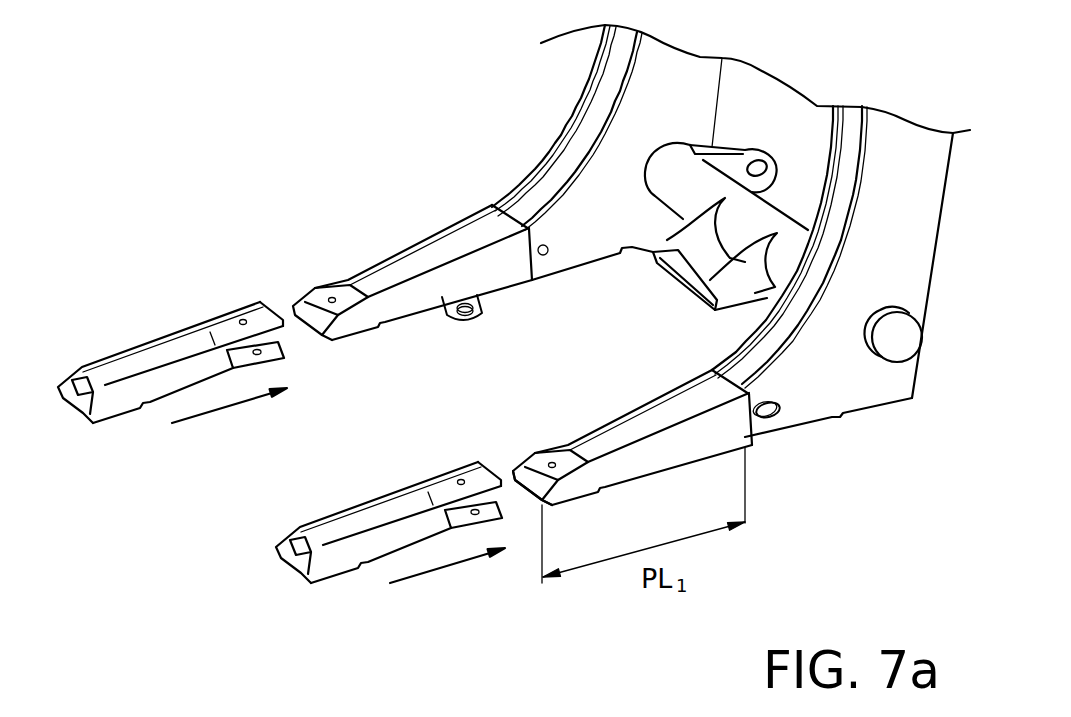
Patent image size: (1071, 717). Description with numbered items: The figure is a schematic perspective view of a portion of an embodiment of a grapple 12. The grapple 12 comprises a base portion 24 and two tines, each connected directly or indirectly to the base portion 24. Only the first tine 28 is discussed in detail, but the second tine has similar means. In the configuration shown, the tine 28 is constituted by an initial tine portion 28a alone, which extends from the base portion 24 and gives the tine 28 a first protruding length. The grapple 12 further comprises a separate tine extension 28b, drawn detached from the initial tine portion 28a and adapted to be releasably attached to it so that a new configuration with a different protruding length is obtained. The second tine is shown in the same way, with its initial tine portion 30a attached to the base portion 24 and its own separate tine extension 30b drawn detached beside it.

The grapple 12 is at (424, 131).
The base portion 24 is at (913, 443).
The first tine 28 is at (790, 502).
The initial tine portion 28a is at (483, 401).
The separate tine extension 28b is at (322, 482).
The initial tine portion of the second tine 30a is at (331, 225).
The separate tine extension of the second tine 30b is at (141, 278).